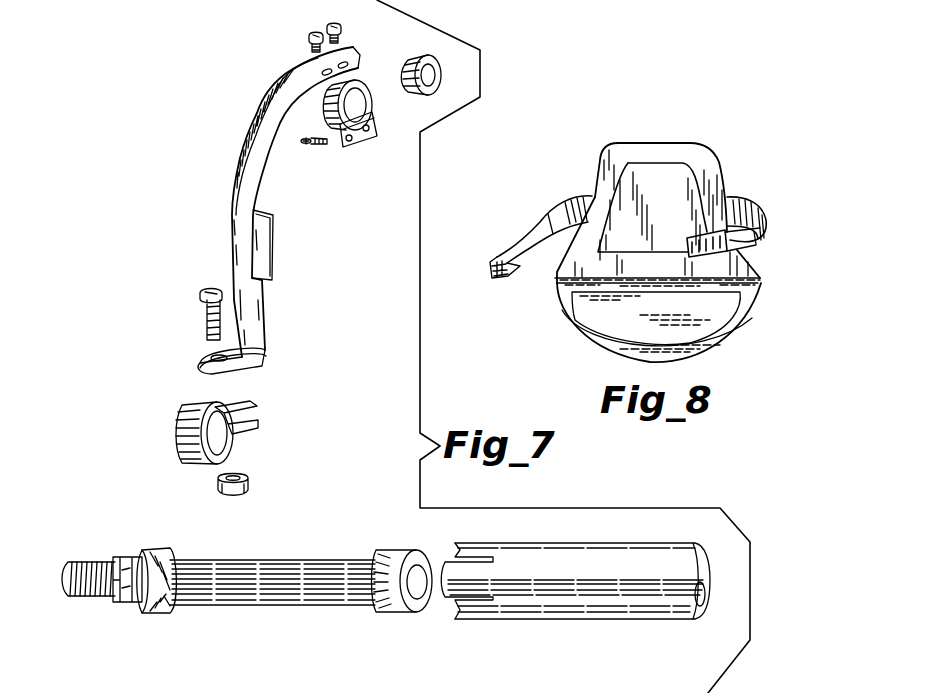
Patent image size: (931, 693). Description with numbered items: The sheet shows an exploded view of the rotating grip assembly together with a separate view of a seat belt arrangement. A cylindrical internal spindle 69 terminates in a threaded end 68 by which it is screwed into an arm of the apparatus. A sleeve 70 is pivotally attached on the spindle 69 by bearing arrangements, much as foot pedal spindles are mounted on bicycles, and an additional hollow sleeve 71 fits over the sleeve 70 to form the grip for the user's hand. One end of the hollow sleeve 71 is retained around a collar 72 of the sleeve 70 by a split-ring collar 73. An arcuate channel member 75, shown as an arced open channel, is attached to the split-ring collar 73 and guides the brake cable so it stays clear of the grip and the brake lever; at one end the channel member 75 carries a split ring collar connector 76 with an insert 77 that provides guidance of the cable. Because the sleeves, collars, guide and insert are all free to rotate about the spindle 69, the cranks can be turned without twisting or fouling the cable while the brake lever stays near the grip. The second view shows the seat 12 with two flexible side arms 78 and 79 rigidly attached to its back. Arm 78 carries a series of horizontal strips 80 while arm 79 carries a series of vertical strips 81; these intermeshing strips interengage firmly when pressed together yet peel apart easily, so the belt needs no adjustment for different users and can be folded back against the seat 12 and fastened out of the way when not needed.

In FIG. 8, the seat 12 is at (692, 148).
In FIG. 7, the threaded end 68 is at (80, 570).
In FIG. 7, the cylindrical internal spindle 69 is at (108, 628).
In FIG. 7, the sleeve 70 is at (302, 562).
In FIG. 7, the hollow sleeve 71 is at (594, 558).
In FIG. 7, the collar 72 is at (150, 610).
In FIG. 7, the split-ring collar 73 is at (172, 432).
In FIG. 7, the arcuate channel member 75 is at (242, 137).
In FIG. 7, the split ring collar connector 76 is at (372, 105).
In FIG. 7, the insert 77 is at (414, 56).
In FIG. 8, the flexible side arm 78 is at (561, 175).
In FIG. 8, the flexible side arm 79 is at (742, 197).
In FIG. 8, the horizontal strips 80 is at (505, 252).
In FIG. 8, the vertical strips 81 is at (770, 250).